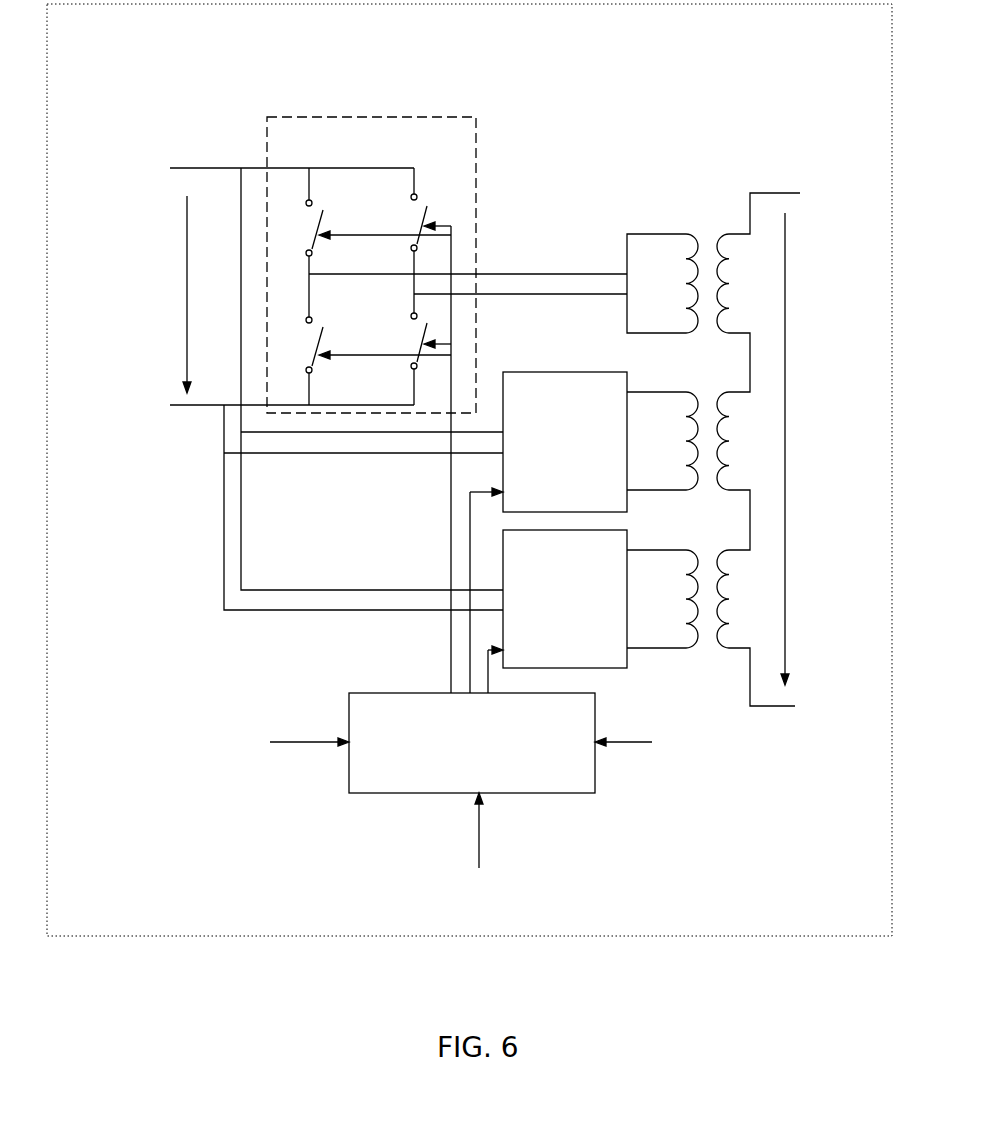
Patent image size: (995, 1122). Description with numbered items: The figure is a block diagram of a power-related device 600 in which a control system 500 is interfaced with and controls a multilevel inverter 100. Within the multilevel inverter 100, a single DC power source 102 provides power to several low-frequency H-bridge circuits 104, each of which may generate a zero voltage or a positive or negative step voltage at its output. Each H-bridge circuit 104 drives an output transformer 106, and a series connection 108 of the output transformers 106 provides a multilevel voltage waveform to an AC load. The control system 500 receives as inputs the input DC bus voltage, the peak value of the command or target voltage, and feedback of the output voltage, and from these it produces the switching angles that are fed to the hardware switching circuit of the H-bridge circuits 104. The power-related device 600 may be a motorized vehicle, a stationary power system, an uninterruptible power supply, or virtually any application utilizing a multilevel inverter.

The multilevel inverter 100 is at (741, 57).
The DC power source 102 is at (89, 240).
The low-frequency H-bridge circuit 104 is at (388, 104).
The output transformer 106 is at (705, 223).
The series connection 108 is at (781, 185).
The control system 500 is at (578, 733).
The power-related device 600 is at (766, 945).